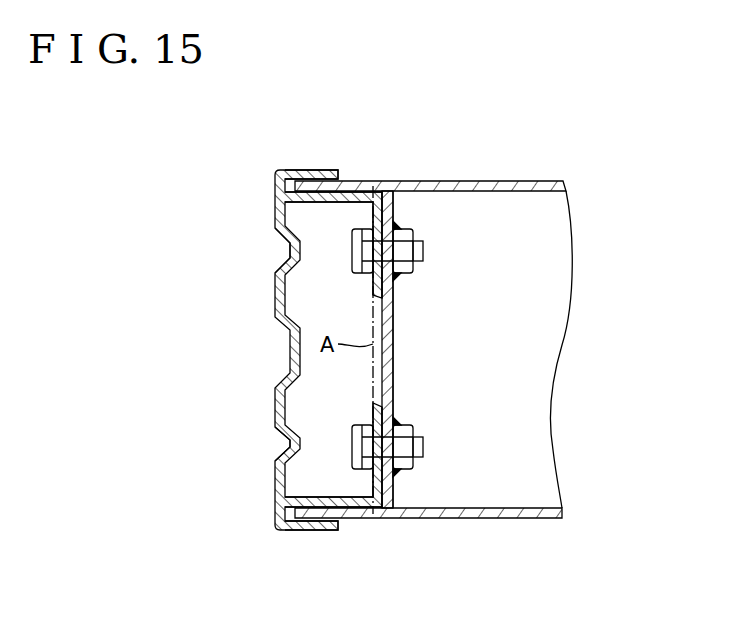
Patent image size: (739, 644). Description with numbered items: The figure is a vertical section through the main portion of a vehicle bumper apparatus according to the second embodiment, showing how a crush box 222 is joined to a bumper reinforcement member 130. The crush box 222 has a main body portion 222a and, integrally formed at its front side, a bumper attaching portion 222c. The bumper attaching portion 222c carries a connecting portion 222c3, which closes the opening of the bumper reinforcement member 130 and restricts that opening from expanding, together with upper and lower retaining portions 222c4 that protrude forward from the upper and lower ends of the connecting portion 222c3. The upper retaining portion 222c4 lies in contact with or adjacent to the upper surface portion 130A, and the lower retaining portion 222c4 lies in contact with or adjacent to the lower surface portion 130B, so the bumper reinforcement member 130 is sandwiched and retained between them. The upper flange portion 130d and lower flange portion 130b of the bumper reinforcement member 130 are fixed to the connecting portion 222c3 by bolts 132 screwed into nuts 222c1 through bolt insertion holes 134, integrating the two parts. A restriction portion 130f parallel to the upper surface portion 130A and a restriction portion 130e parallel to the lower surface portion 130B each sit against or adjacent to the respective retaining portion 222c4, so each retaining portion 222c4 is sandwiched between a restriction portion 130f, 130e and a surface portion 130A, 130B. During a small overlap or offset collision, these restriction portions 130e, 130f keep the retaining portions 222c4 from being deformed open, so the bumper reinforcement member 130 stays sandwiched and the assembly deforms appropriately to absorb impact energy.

The bumper reinforcement member 130 is at (290, 352).
The restriction portion 130f is at (305, 178).
The upper surface portion 130A is at (295, 193).
The upper flange portion 130d is at (373, 214).
The lower flange portion 130b is at (380, 474).
The lower surface portion 130B is at (287, 498).
The restriction portion 130e is at (307, 528).
The bolt insertion hole 134 is at (287, 253).
The bolt 132 is at (366, 277).
The crush box 222 is at (433, 362).
The retaining portion 222c4 is at (365, 190).
The bumper attaching portion 222c is at (378, 518).
The nut 222c1 is at (404, 275).
The connecting portion 222c3 is at (392, 347).
The main body portion 222a is at (513, 517).